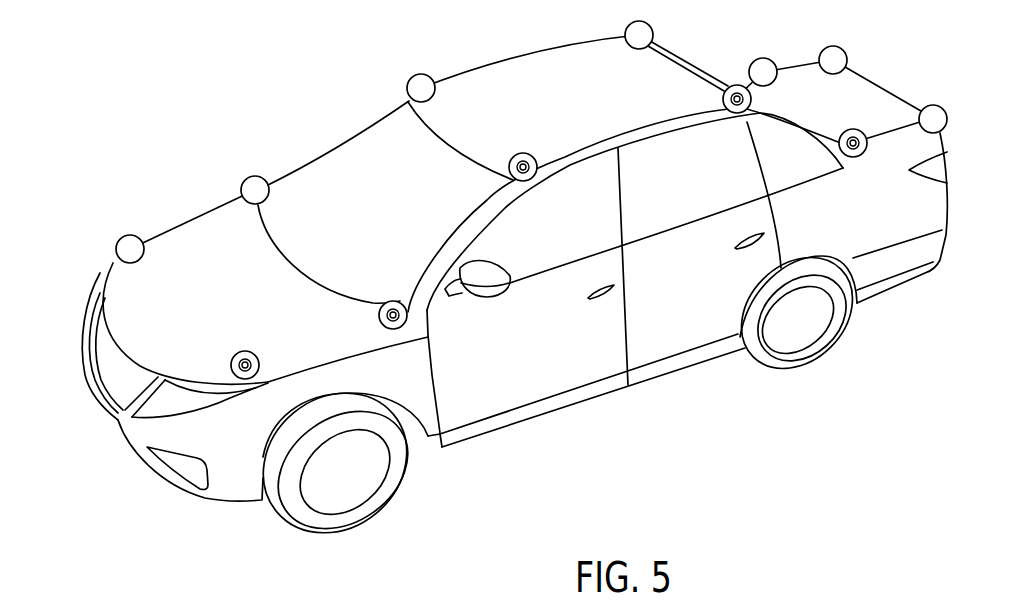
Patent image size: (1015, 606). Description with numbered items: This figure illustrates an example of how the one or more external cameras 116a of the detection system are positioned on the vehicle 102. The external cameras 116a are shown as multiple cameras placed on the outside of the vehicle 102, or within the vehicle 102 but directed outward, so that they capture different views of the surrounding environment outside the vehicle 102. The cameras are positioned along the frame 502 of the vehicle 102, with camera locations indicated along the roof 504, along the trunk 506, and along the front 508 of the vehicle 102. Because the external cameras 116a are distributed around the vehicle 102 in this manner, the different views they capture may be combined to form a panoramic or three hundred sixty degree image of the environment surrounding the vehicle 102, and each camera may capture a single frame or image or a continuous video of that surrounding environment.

The vehicle 102 is at (640, 386).
The external cameras 116a is at (116, 249).
The frame 502 is at (567, 155).
The roof 504 is at (481, 74).
The trunk 506 is at (805, 70).
The front 508 is at (295, 320).